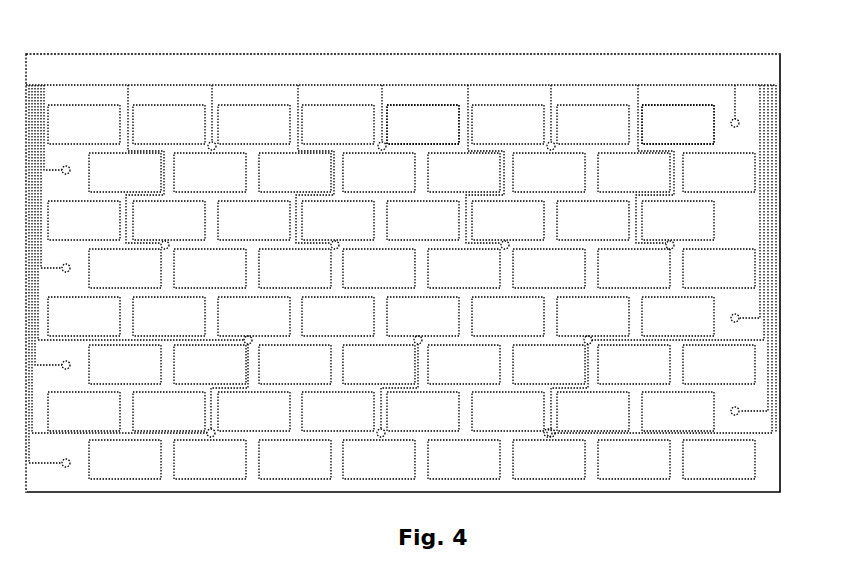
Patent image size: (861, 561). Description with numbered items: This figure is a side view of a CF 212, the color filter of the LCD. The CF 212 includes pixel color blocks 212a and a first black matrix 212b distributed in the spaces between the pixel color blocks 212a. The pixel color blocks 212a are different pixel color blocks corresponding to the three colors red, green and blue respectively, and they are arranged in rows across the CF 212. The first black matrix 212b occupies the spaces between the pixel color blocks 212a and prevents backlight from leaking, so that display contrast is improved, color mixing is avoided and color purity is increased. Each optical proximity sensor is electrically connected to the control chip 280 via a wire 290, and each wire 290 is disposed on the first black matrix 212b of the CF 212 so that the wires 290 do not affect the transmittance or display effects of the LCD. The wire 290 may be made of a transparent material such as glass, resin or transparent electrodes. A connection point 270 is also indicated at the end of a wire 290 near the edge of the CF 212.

The CF 212 is at (785, 200).
The pixel color blocks 212a is at (422, 125).
The first black matrix 212b is at (718, 100).
The via / electrical connection point 270 is at (742, 122).
The control chip 280 is at (763, 73).
The wire 290 is at (738, 105).